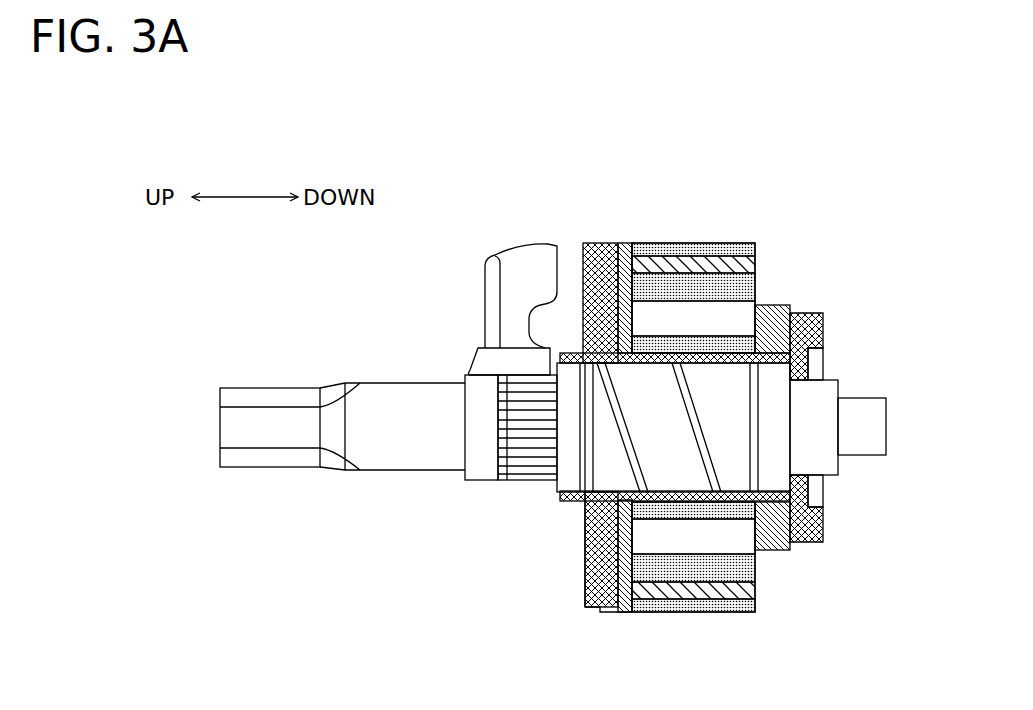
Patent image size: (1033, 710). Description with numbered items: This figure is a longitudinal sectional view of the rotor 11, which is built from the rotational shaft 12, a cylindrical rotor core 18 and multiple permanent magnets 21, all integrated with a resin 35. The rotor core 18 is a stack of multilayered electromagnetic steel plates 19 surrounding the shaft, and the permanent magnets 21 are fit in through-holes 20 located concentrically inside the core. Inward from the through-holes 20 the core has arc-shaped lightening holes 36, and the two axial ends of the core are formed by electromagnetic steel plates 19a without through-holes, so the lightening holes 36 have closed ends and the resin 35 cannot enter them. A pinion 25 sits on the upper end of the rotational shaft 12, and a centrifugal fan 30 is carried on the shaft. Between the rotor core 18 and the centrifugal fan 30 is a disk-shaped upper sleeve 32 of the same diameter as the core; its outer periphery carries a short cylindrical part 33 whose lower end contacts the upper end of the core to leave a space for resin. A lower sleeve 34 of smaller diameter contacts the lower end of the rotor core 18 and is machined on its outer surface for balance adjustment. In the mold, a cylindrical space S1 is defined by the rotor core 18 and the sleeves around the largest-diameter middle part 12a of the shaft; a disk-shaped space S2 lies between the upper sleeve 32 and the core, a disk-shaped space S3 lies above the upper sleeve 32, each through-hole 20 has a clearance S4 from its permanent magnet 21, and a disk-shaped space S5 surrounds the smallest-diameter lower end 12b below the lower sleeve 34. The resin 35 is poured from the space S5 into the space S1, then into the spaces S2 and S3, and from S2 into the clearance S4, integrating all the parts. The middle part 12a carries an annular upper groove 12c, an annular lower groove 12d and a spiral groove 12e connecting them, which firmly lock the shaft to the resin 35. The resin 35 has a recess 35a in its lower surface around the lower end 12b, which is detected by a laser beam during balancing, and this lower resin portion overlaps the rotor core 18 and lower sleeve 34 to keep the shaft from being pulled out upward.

The rotor 11 is at (493, 166).
The rotational shaft 12 is at (404, 400).
The middle part 12a is at (812, 318).
The lower end 12b is at (830, 460).
The upper groove 12c is at (553, 452).
The lower groove 12d is at (758, 407).
The spiral groove 12e is at (561, 492).
The rotor core 18 is at (737, 242).
The electromagnetic steel plate 19 is at (661, 243).
The electromagnetic steel plates without through-holes 19a is at (640, 366).
The through-holes 20 is at (641, 243).
The permanent magnets 21 is at (745, 243).
The pinion 25 is at (262, 398).
The centrifugal fan 30 is at (521, 250).
The upper sleeve 32 is at (586, 552).
The short cylindrical part 33 is at (600, 612).
The lower sleeve 34 is at (783, 308).
The resin 35 is at (583, 328).
The recess 35a is at (826, 358).
The lightening holes 36 is at (611, 244).
The cylindrical space S1 is at (728, 343).
The disk-shaped space S2 is at (585, 560).
The disk-shaped space S3 is at (580, 250).
The clearance S4 is at (693, 242).
The disk-shaped space S5 is at (837, 334).